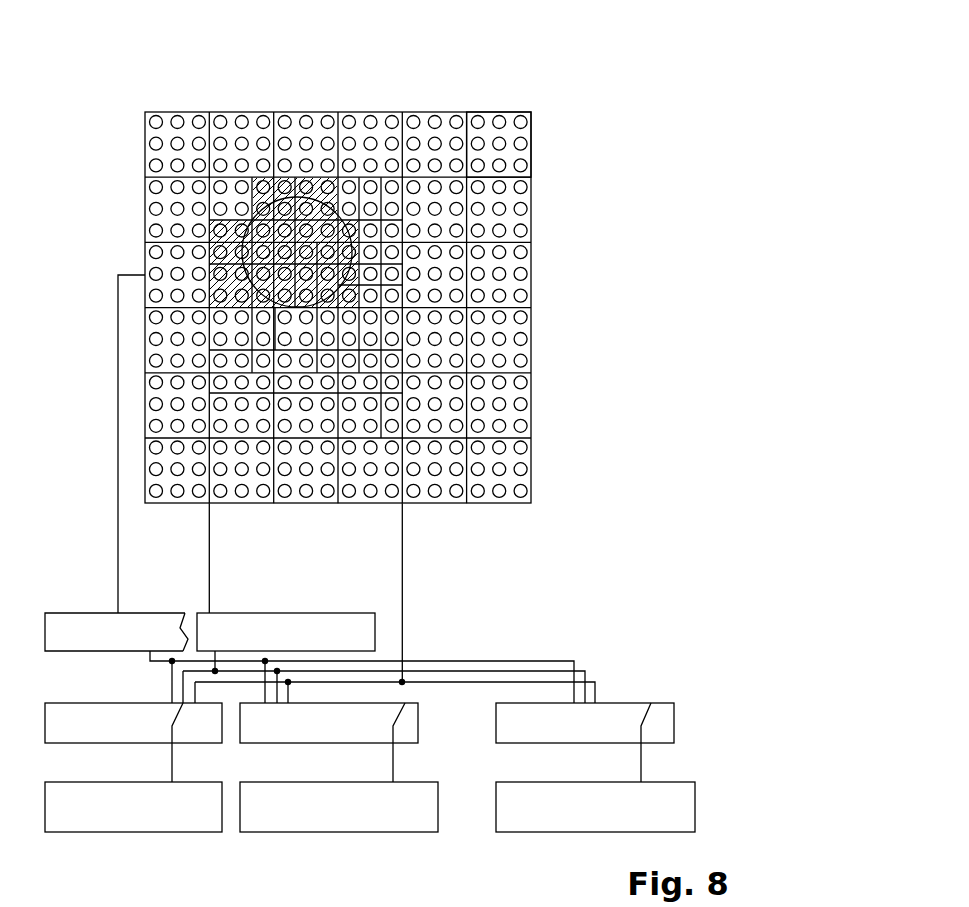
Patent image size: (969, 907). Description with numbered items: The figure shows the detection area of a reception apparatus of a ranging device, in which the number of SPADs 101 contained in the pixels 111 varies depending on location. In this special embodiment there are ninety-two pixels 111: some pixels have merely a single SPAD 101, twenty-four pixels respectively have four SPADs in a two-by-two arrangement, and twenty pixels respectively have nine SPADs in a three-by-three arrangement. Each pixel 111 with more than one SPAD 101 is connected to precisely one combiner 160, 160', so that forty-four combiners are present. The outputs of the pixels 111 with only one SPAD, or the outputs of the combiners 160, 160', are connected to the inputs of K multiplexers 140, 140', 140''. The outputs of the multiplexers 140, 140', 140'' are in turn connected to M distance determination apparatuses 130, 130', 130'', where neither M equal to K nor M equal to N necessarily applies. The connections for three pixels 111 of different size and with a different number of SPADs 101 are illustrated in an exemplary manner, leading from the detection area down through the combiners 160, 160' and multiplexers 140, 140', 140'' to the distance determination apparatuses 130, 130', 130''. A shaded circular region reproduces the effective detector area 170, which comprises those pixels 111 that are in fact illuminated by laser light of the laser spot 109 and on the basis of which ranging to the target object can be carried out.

The SPAD 101 is at (532, 288).
The laser spot 109 is at (247, 215).
The pixel 111 is at (472, 222).
The effective detector area 170 is at (225, 248).
The combiner 160 is at (116, 632).
The combiner 160' is at (286, 632).
The multiplexer 140 is at (133, 742).
The multiplexer 140' is at (329, 742).
The multiplexer 140'' is at (585, 742).
The distance determination apparatus 130 is at (133, 807).
The distance determination apparatus 130' is at (339, 807).
The distance determination apparatus 130'' is at (595, 807).